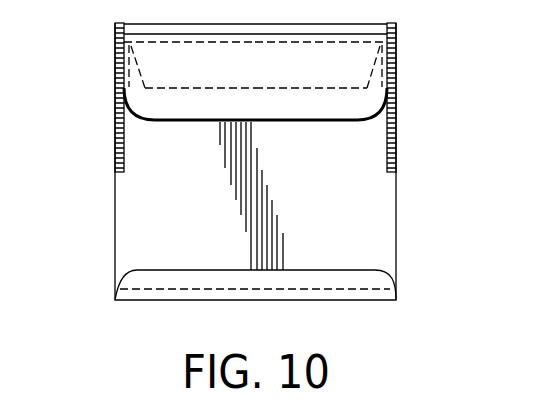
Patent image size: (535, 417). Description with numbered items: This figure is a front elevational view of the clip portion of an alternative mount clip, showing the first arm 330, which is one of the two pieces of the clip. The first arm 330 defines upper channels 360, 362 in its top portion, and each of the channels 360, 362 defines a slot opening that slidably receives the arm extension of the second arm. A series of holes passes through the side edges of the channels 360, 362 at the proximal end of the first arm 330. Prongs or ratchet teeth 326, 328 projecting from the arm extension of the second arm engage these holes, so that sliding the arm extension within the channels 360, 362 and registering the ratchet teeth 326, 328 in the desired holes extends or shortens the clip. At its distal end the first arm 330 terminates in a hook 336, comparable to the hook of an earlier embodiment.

The ratchet tooth 326 is at (115, 40).
The ratchet tooth 328 is at (397, 36).
The first arm 330 is at (362, 240).
The hook 336 is at (145, 282).
The upper channel 360 is at (118, 176).
The upper channel 362 is at (392, 162).